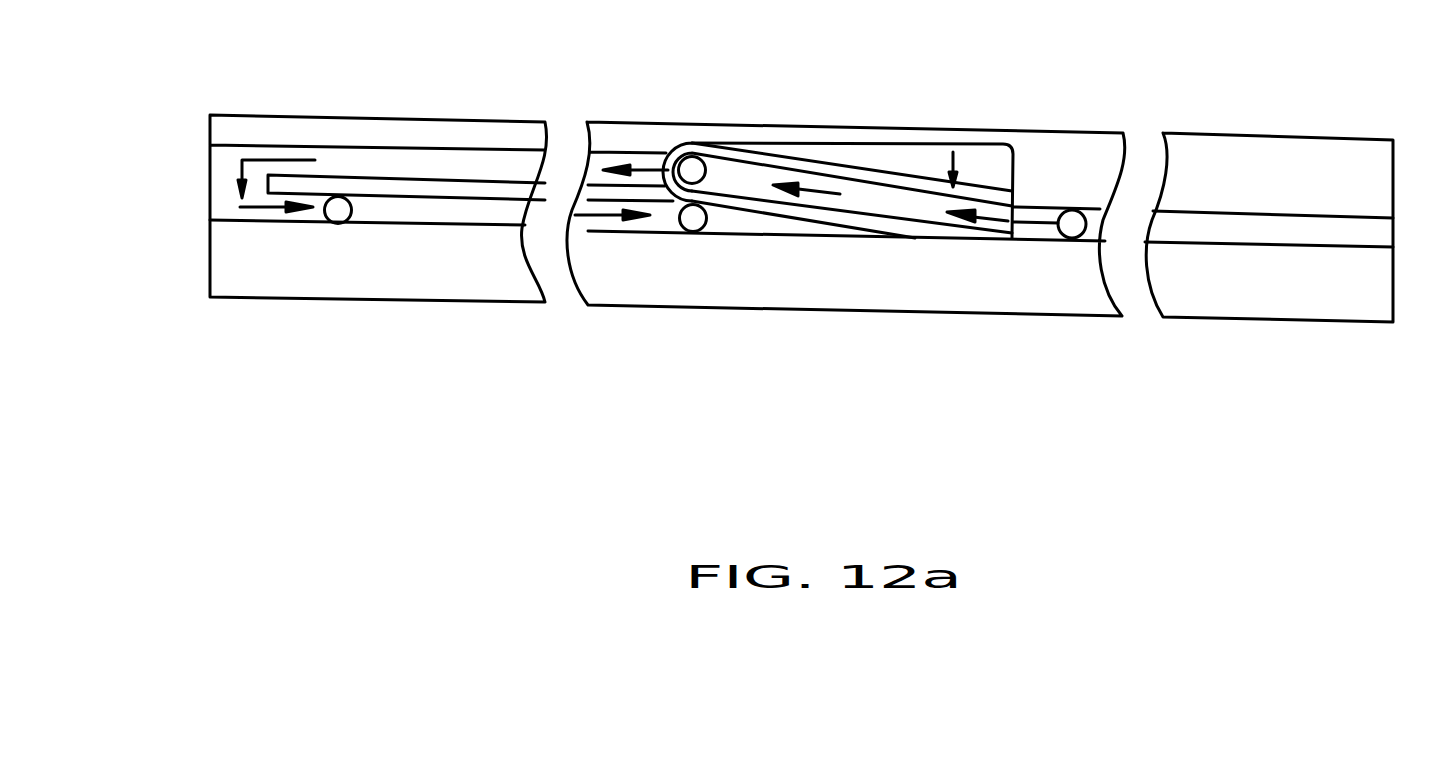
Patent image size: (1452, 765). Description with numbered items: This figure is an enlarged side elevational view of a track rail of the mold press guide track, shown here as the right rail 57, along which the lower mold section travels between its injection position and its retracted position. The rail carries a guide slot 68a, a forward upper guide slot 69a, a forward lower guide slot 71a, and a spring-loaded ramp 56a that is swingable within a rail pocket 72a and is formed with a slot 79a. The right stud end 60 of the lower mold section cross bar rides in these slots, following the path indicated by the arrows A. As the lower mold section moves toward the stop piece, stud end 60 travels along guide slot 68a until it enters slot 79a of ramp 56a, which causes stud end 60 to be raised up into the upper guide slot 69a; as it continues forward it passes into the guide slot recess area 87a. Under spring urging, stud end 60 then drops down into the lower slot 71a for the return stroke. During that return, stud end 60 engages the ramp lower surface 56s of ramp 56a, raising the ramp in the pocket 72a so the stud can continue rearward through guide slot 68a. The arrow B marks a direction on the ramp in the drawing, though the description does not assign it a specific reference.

The forward upper guide slot 69a is at (362, 160).
The guide slot recess area 87a is at (225, 192).
The forward lower guide slot 71a is at (307, 217).
The right stud end 60 is at (338, 212).
The arrows indicating path of stud end A is at (263, 212).
The direction of engagement B is at (952, 163).
The spring-loaded ramp 56a is at (748, 160).
The ramp lower surface 56s is at (772, 218).
The rail pocket 72a is at (983, 175).
The slot of ramp 79a is at (928, 196).
The guide slot 68a is at (1217, 223).
The right rail 57 is at (1350, 193).